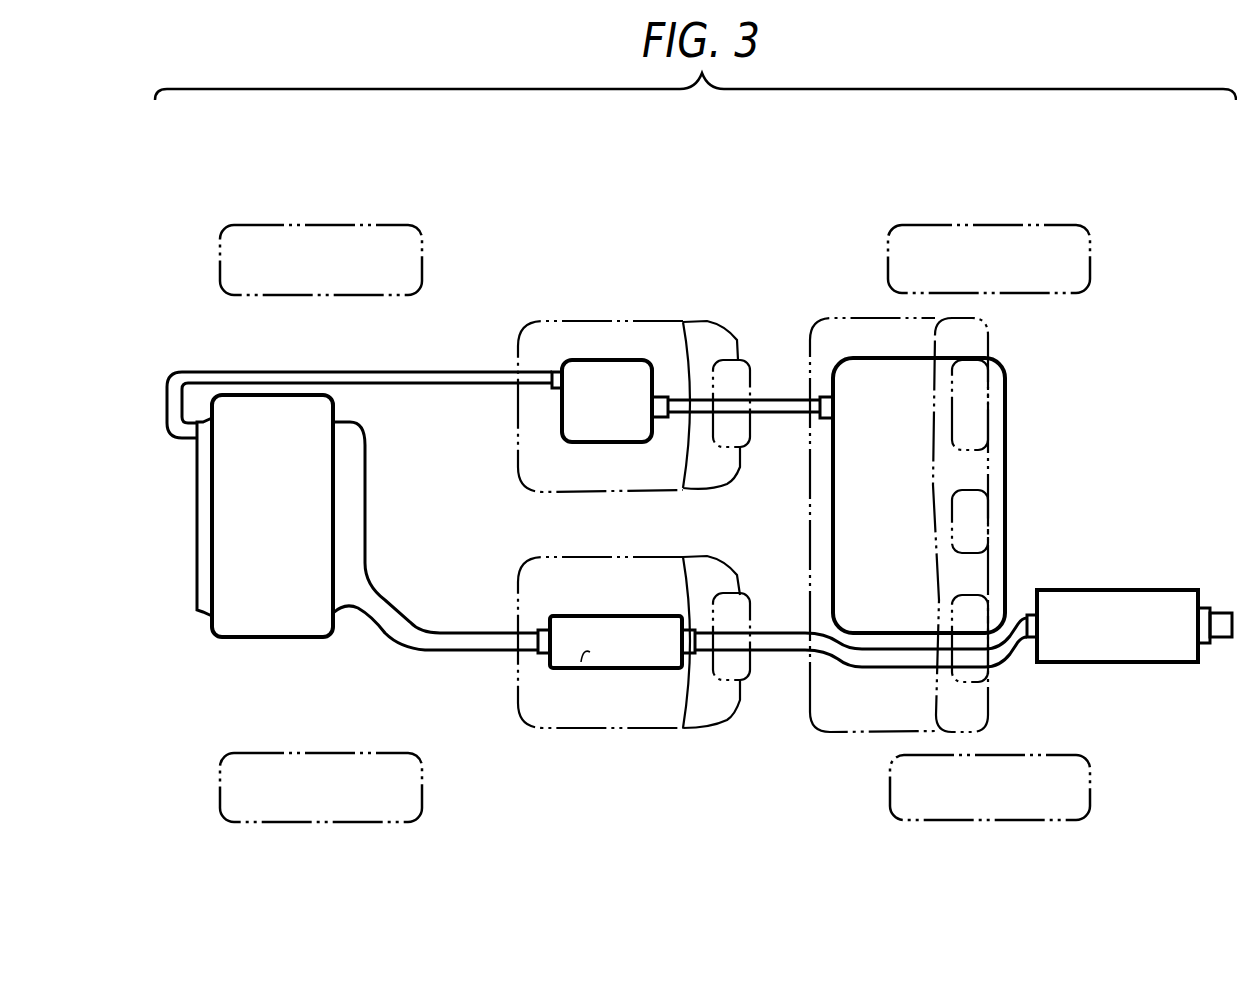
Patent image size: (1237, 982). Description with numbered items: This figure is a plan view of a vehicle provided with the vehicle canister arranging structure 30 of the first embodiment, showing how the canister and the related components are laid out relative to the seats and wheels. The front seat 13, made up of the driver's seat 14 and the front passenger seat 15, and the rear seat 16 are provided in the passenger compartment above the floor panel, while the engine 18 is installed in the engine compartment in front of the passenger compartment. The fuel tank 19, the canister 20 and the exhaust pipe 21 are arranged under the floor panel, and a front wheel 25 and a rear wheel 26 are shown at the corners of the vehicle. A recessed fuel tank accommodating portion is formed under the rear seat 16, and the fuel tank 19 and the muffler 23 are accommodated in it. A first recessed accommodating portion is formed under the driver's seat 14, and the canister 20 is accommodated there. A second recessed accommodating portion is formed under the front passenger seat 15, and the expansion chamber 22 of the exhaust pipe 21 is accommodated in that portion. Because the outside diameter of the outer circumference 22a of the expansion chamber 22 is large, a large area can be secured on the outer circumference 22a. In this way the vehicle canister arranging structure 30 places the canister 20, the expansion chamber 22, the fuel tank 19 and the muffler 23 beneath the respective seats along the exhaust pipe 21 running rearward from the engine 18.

The front seat 13 is at (742, 322).
The driver's seat 14 is at (700, 320).
The front passenger seat 15 is at (710, 728).
The rear seat 16 is at (991, 342).
The engine 18 is at (260, 622).
The fuel tank 19 is at (1005, 420).
The canister 20 is at (613, 360).
The exhaust pipe 21 is at (452, 662).
The expansion chamber 22 is at (617, 668).
The outer circumference 22a is at (581, 662).
The muffler 23 is at (1145, 663).
The front wheel 25 is at (292, 226).
The rear wheel 26 is at (996, 228).
The vehicle canister arranging structure 30 is at (578, 290).